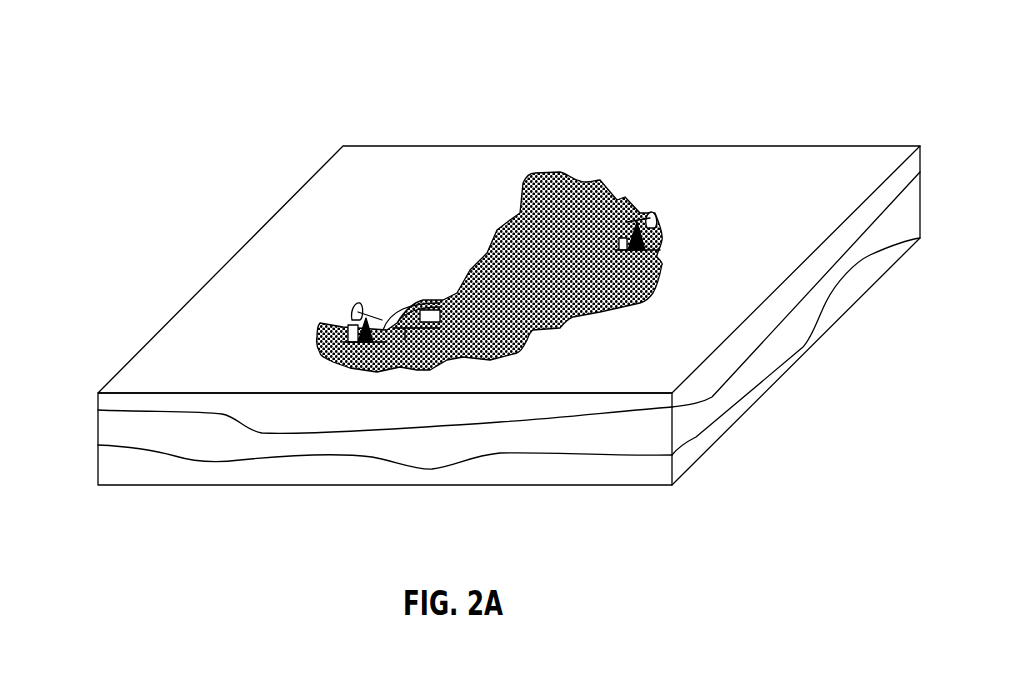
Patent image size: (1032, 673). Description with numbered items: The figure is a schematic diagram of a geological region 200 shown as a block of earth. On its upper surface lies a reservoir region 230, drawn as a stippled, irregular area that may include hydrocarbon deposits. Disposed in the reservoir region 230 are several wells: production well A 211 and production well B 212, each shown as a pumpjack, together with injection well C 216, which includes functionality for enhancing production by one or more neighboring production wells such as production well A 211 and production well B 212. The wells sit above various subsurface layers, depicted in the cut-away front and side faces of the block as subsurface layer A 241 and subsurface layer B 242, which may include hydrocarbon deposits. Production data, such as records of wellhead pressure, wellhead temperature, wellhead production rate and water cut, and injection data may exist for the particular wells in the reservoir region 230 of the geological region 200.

The geological region 200 is at (330, 108).
The production well A 211 is at (343, 313).
The production well B 212 is at (647, 210).
The injection well C 216 is at (412, 312).
The reservoir region 230 is at (560, 190).
The subsurface layer A 241 is at (527, 440).
The subsurface layer B 242 is at (250, 470).